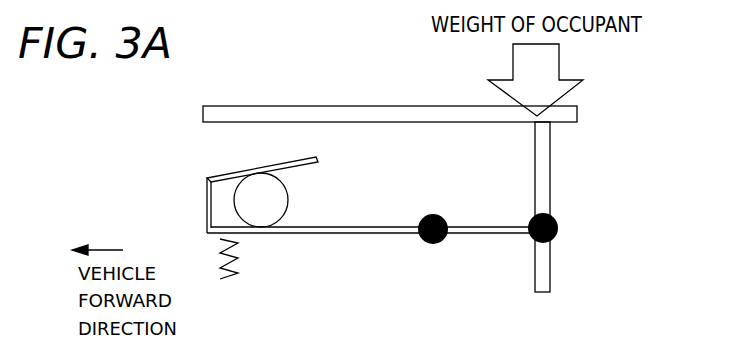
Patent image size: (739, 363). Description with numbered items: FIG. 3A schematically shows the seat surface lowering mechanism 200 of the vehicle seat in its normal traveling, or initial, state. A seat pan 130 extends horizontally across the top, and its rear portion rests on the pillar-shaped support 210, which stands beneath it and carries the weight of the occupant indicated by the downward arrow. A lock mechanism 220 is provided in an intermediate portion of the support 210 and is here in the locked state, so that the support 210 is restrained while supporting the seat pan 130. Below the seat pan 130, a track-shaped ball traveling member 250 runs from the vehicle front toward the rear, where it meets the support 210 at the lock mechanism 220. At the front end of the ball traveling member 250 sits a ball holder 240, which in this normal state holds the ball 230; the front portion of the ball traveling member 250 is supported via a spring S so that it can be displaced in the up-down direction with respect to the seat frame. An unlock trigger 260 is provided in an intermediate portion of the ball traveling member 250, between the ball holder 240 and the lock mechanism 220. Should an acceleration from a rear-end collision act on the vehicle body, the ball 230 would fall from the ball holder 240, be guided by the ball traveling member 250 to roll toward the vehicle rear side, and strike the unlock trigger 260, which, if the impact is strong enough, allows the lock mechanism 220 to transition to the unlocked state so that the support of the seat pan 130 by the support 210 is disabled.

The seat pan 130 is at (261, 106).
The seat surface lowering mechanism 200 is at (190, 152).
The support 210 is at (548, 175).
The lock mechanism 220 is at (557, 233).
The ball 230 is at (239, 203).
The ball holder 240 is at (248, 170).
The ball traveling member 250 is at (353, 231).
The unlock trigger 260 is at (438, 242).
The spring S is at (224, 255).